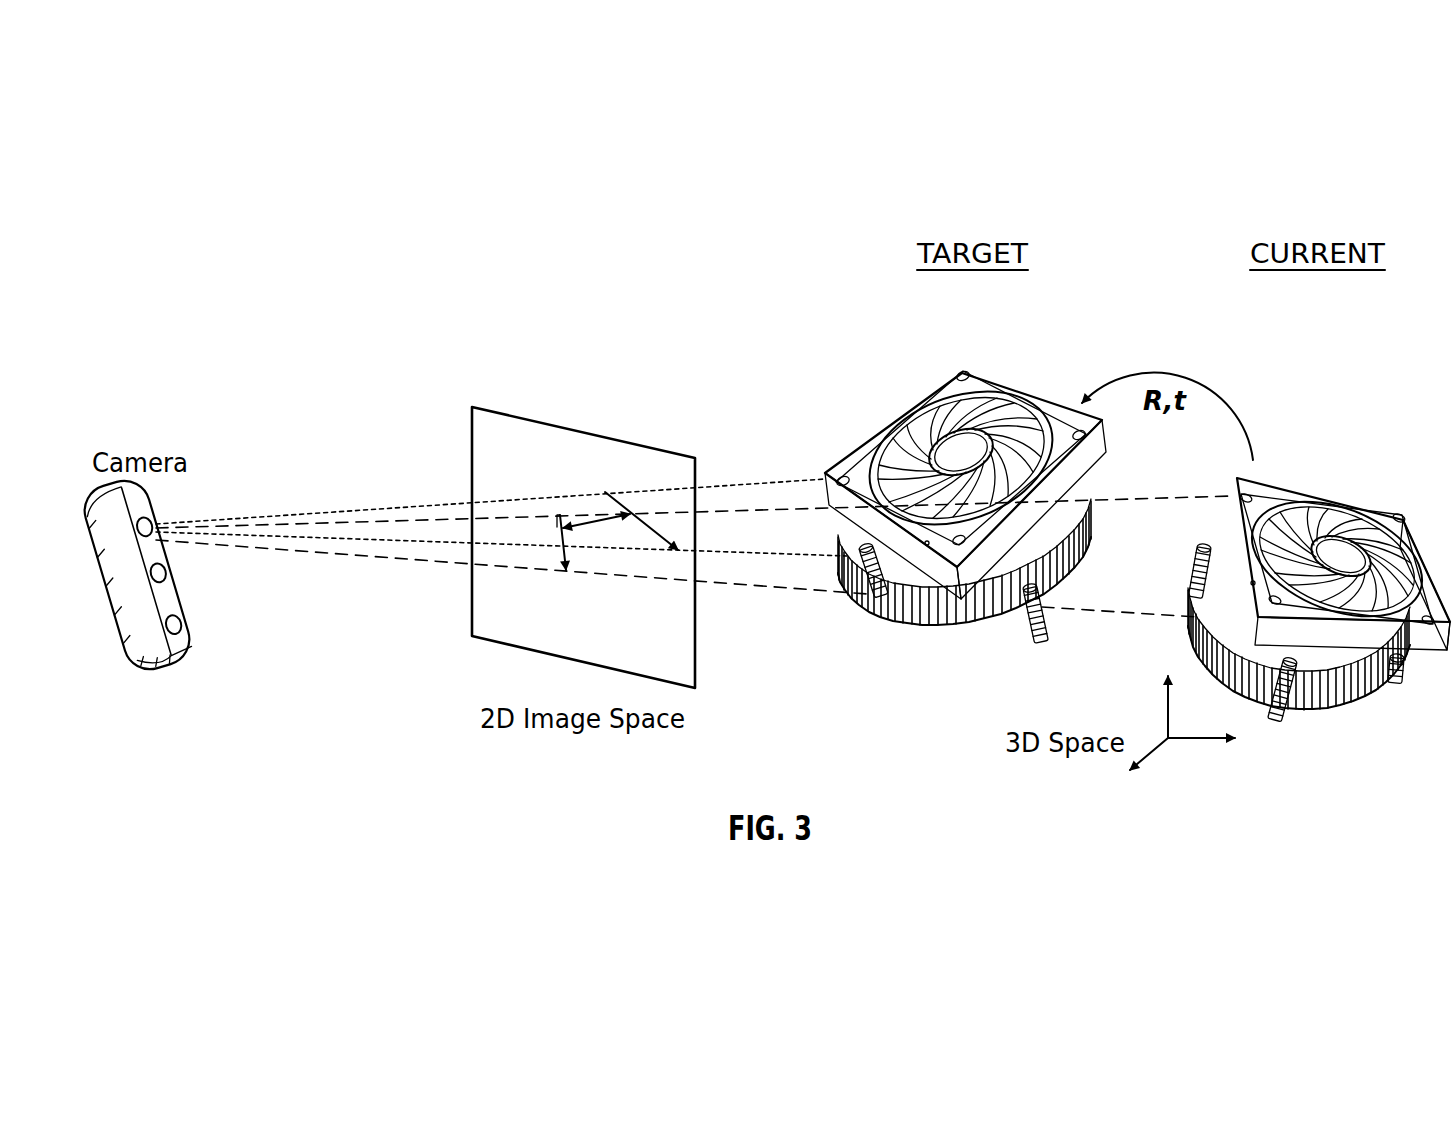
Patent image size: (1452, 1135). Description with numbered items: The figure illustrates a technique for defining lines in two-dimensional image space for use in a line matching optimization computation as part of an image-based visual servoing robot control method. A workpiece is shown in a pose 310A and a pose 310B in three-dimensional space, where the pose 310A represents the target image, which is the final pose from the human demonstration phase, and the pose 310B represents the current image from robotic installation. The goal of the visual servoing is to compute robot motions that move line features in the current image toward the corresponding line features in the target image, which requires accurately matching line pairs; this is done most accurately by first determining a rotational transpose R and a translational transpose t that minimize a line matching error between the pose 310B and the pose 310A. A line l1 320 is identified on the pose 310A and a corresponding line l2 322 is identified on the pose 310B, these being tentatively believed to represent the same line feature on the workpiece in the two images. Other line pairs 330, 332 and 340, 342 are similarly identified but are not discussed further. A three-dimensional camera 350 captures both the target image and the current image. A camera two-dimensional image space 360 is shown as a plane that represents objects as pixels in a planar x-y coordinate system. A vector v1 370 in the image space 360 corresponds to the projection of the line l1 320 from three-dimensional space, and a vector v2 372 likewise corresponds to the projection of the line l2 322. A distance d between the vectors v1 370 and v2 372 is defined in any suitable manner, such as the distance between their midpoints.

The pose 310A is at (948, 360).
The pose 310B is at (1377, 467).
The line l1 320 is at (927, 543).
The line l2 322 is at (1253, 583).
The line 330 is at (920, 412).
The line 332 is at (1313, 483).
The line 340 is at (980, 433).
The line 342 is at (1370, 540).
The 3D camera 350 is at (160, 677).
The 2D image space 360 is at (505, 410).
The vector v1 370 is at (641, 516).
The vector v2 372 is at (560, 535).